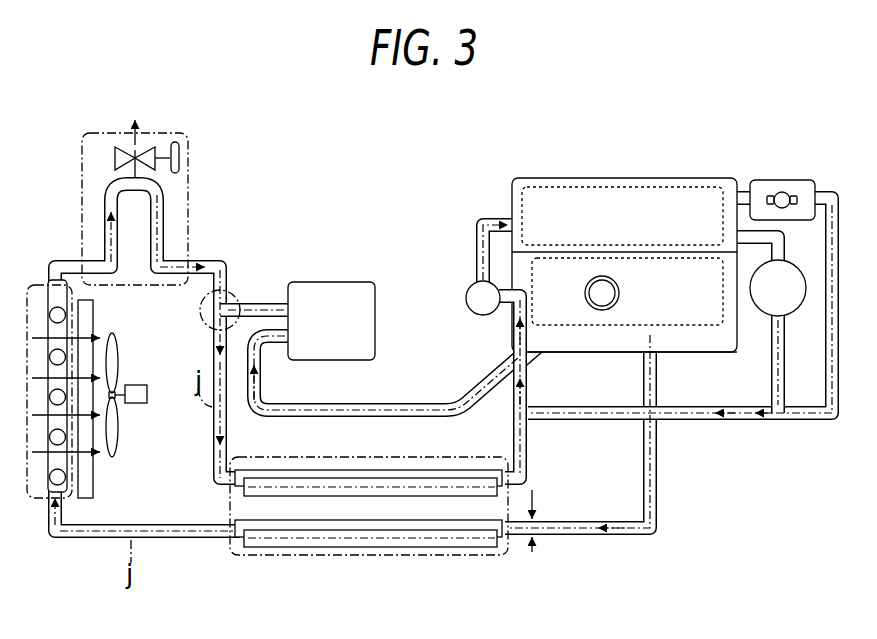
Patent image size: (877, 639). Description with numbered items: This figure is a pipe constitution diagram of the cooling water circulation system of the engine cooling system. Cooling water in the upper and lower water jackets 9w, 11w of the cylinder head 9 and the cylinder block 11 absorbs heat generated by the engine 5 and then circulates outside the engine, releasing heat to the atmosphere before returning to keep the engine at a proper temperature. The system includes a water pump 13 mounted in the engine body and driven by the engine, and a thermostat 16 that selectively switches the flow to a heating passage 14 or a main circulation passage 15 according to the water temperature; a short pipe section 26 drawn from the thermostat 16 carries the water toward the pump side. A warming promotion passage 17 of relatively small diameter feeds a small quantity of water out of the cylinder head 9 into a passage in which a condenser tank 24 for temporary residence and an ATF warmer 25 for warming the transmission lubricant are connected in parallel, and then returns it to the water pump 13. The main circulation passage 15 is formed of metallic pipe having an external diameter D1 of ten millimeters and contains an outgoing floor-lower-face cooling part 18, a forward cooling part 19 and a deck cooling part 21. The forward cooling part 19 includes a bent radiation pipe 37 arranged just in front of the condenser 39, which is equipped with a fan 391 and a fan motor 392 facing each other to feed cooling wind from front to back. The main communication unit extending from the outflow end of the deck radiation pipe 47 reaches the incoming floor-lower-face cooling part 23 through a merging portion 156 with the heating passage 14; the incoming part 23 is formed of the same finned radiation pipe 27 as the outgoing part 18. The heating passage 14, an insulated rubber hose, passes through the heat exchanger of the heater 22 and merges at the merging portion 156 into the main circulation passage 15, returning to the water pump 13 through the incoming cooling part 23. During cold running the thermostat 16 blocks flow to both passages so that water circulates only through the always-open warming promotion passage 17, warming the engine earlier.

The engine 5 is at (504, 172).
The cylinder head 9 is at (735, 178).
The upper water jacket 9w is at (672, 178).
The cylinder block 11 is at (712, 352).
The lower water jacket 11w is at (601, 326).
The water pump 13 is at (467, 309).
The heating passage 14 is at (440, 404).
The main circulation passage 15 is at (638, 535).
The thermostat 16 is at (603, 297).
The warming promotion passage 17 is at (760, 420).
The outgoing floor-lower-face cooling part 18 is at (440, 556).
The forward cooling part 19 is at (31, 502).
The deck cooling part 21 is at (188, 152).
The heater 22 is at (374, 283).
The incoming floor-lower-face cooling part 23 is at (328, 458).
The condenser tank 24 is at (821, 172).
The ATF warmer 25 is at (788, 310).
The coolant pipe 26 is at (555, 342).
The finned radiation pipe 27 is at (343, 497).
The bent radiation pipe 37 is at (52, 286).
The condenser 39 is at (93, 488).
The deck radiation pipe 47 is at (167, 227).
The merging portion 156 is at (238, 293).
The fan 391 is at (118, 356).
The fan motor 392 is at (147, 395).
The external diameter D1 is at (547, 533).